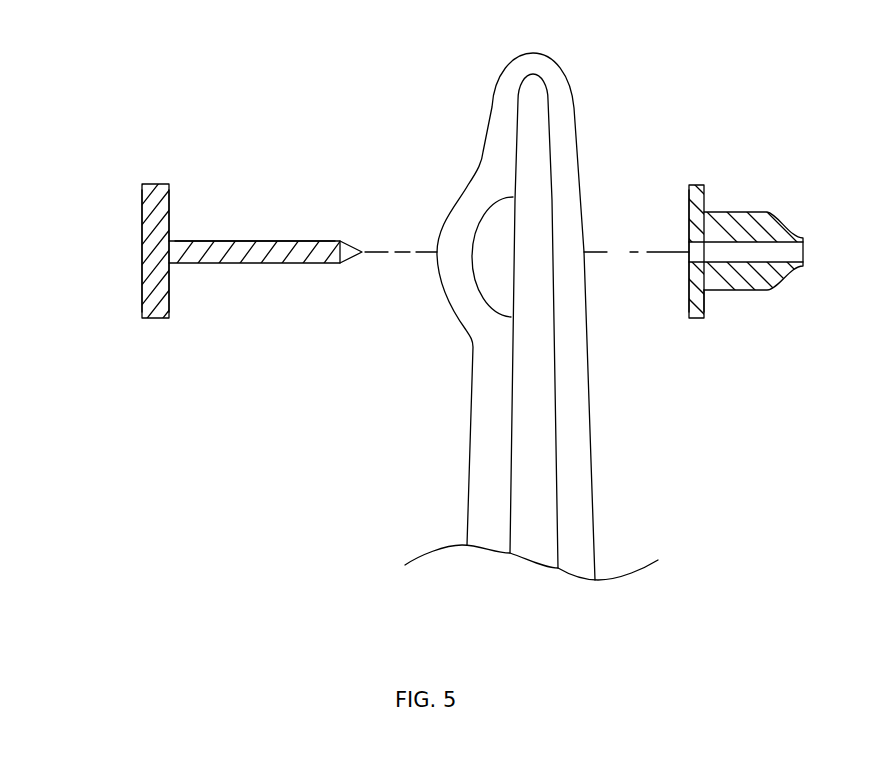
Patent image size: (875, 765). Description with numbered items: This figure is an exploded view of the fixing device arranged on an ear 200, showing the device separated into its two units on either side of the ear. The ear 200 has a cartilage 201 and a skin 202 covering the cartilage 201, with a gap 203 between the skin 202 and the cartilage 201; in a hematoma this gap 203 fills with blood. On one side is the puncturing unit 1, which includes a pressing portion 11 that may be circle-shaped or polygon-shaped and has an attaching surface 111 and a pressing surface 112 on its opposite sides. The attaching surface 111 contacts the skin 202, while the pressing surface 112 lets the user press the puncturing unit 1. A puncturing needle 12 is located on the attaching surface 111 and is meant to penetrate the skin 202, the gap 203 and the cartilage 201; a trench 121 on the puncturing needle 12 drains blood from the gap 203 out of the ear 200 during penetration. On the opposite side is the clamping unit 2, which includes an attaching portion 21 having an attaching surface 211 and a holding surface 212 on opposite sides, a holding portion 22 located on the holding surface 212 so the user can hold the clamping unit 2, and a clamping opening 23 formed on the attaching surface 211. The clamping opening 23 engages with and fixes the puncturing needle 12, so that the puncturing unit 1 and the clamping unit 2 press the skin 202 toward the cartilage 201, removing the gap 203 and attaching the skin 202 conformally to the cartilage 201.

The puncturing unit 1 is at (105, 167).
The pressing portion 11 is at (155, 312).
The attaching surface 111 is at (170, 297).
The pressing surface 112 is at (142, 262).
The puncturing needle 12 is at (282, 253).
The trench 121 is at (258, 240).
The ear 200 is at (456, 83).
The cartilage 201 is at (532, 128).
The skin 202 is at (485, 428).
The gap 203 is at (490, 226).
The clamping unit 2 is at (803, 205).
The attaching portion 21 is at (697, 318).
The attaching surface 211 is at (689, 290).
The holding surface 212 is at (704, 305).
The holding portion 22 is at (767, 278).
The clamping opening 23 is at (738, 231).